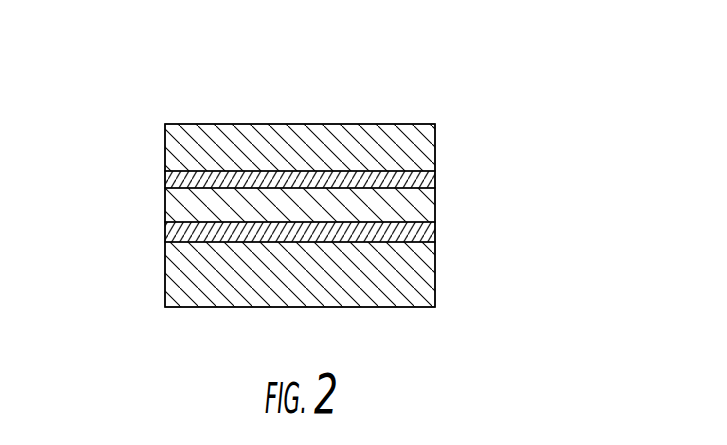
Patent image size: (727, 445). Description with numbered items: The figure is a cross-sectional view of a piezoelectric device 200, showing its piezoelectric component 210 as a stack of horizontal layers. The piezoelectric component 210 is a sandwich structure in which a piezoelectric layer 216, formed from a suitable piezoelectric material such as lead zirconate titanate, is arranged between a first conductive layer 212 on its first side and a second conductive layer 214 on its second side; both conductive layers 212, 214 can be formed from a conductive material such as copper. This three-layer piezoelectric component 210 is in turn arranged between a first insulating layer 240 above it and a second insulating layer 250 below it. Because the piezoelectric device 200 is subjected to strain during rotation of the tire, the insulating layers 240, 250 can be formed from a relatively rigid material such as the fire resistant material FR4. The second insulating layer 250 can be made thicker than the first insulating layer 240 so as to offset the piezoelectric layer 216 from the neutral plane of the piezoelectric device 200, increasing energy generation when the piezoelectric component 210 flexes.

The piezoelectric device 200 is at (542, 70).
The piezoelectric component 210 is at (158, 170).
The first conductive layer 212 is at (435, 178).
The second conductive layer 214 is at (435, 232).
The piezoelectric layer 216 is at (435, 200).
The first insulating layer 240 is at (165, 148).
The second insulating layer 250 is at (163, 272).